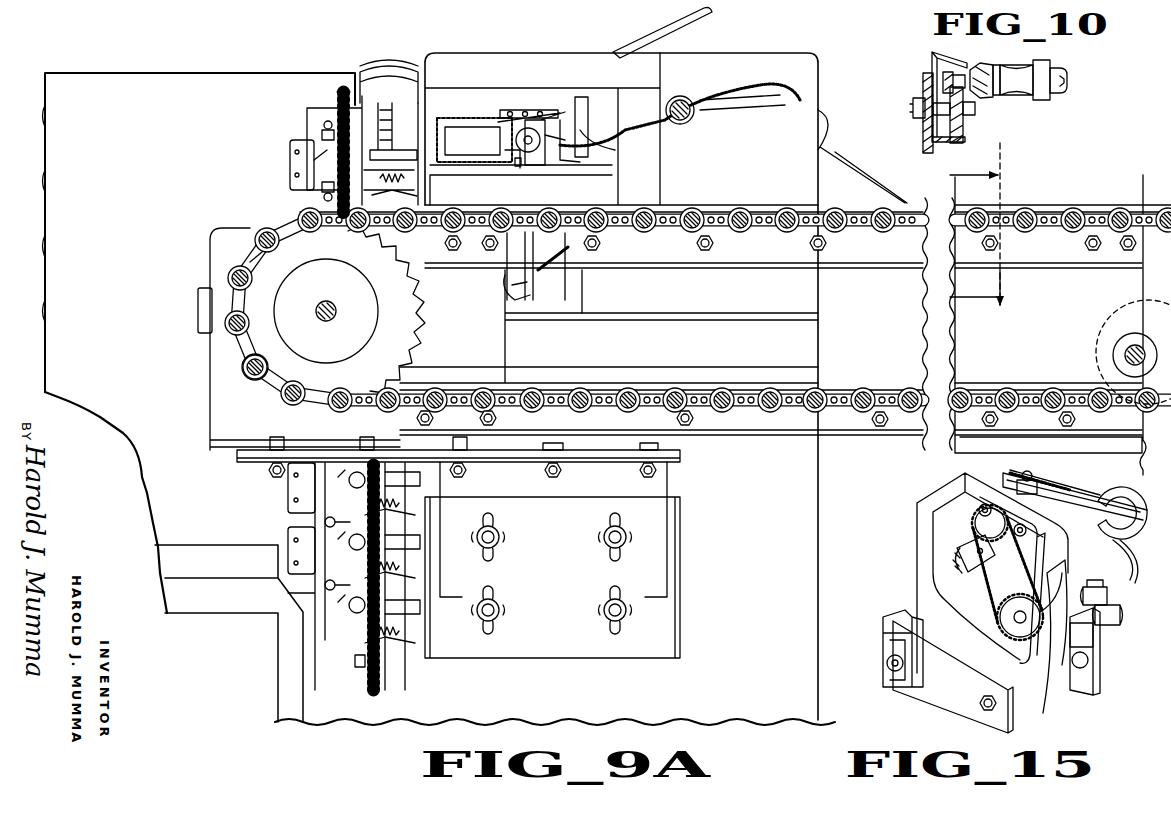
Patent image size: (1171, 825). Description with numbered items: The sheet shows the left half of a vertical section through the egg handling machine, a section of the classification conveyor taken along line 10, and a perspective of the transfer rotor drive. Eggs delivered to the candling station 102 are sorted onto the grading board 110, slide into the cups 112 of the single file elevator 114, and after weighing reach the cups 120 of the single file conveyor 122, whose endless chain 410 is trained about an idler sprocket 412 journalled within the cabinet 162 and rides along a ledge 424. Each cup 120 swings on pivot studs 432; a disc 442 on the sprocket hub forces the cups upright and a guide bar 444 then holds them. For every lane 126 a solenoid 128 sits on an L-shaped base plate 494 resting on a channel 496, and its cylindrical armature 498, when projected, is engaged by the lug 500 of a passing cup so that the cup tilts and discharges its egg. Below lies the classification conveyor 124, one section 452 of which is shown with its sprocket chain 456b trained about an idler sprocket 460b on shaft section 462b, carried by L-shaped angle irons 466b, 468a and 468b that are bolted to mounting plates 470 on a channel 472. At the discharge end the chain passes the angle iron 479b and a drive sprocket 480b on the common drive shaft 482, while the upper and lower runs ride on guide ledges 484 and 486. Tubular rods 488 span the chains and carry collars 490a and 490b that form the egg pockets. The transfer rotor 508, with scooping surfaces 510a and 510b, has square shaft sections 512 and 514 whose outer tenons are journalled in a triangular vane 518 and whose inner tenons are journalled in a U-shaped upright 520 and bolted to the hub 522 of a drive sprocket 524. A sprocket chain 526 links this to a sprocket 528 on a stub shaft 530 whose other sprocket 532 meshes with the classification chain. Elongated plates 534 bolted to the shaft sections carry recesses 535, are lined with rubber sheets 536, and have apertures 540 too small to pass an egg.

In FIG. 9A, the section line 10 is at (975, 169).
In FIG. 9A, the candling station 102 is at (138, 497).
In FIG. 9A, the grading board 110 is at (172, 122).
In FIG. 9A, the cups 112 is at (394, 47).
In FIG. 9A, the single file elevator 114 is at (350, 68).
In FIG. 9A, the cups 120 is at (548, 135).
In FIG. 9A, the single file conveyor 122 is at (527, 126).
In FIG. 9A, the classification conveyor 124 is at (238, 366).
In FIG. 10, the classification conveyor 124 is at (1046, 62).
In FIG. 15, the classification conveyor 124 is at (1143, 573).
In FIG. 10, the lanes 126 is at (1014, 85).
In FIG. 15, the lanes 126 is at (1095, 627).
In FIG. 9A, the solenoid 128 is at (472, 141).
In FIG. 9A, the cabinet 162 is at (825, 62).
In FIG. 9A, the endless chain 410 is at (536, 150).
In FIG. 9A, the idler sprocket 412 is at (498, 272).
In FIG. 9A, the ledge 424 is at (524, 160).
In FIG. 9A, the pivot studs 432 is at (528, 278).
In FIG. 9A, the disc 442 is at (567, 128).
In FIG. 9A, the guide bar 444 is at (587, 160).
In FIG. 9A, the classification conveyor section 452 is at (248, 388).
In FIG. 9A, the sprocket chain 456b is at (240, 252).
In FIG. 9A, the idler sprocket 460b is at (340, 378).
In FIG. 9A, the shaft section 462b is at (318, 313).
In FIG. 15, the L-shaped angle iron 466b is at (963, 710).
In FIG. 15, the L-shaped angle iron 468a is at (1073, 707).
In FIG. 9A, the L-shaped angle iron 468b is at (233, 415).
In FIG. 9A, the mounting plates 470 is at (673, 454).
In FIG. 9A, the channel 472 is at (667, 481).
In FIG. 9A, the L-shaped angle iron 479b is at (1068, 303).
In FIG. 10, the L-shaped angle iron 479b is at (924, 147).
In FIG. 9A, the drive sprocket 480b is at (1133, 356).
In FIG. 9A, the drive shaft 482 is at (1135, 360).
In FIG. 9A, the guide ledge 484 is at (967, 237).
In FIG. 10, the guide ledge 484 is at (965, 128).
In FIG. 9A, the guide ledge 486 is at (962, 427).
In FIG. 9A, the tubular rods 488 is at (790, 233).
In FIG. 10, the tubular rods 488 is at (981, 63).
In FIG. 10, the collar 490a is at (1045, 80).
In FIG. 10, the collar 490b is at (979, 100).
In FIG. 9A, the base plate 494 is at (571, 165).
In FIG. 9A, the channel 496 is at (531, 160).
In FIG. 9A, the cylindrical armature 498 is at (494, 130).
In FIG. 9A, the lug 500 is at (526, 152).
In FIG. 9A, the rotor 508 is at (690, 97).
In FIG. 15, the rotor 508 is at (1082, 470).
In FIG. 9A, the scooping surface 510a is at (655, 152).
In FIG. 9A, the scooping surface 510b is at (757, 78).
In FIG. 15, the shaft section 512 is at (950, 563).
In FIG. 9A, the shaft section 514 is at (691, 123).
In FIG. 9A, the triangular vane 518 is at (850, 190).
In FIG. 15, the upright 520 is at (933, 493).
In FIG. 15, the hub 522 is at (977, 540).
In FIG. 15, the drive sprocket 524 is at (978, 522).
In FIG. 15, the sprocket chain 526 is at (990, 583).
In FIG. 15, the sprocket 528 is at (997, 618).
In FIG. 15, the stub shaft 530 is at (1003, 627).
In FIG. 15, the sprocket 532 is at (1047, 713).
In FIG. 15, the elongated plates 534 is at (1135, 480).
In FIG. 15, the recesses 535 is at (1110, 514).
In FIG. 15, the rubber sheets 536 is at (1128, 545).
In FIG. 15, the apertures 540 is at (1123, 561).